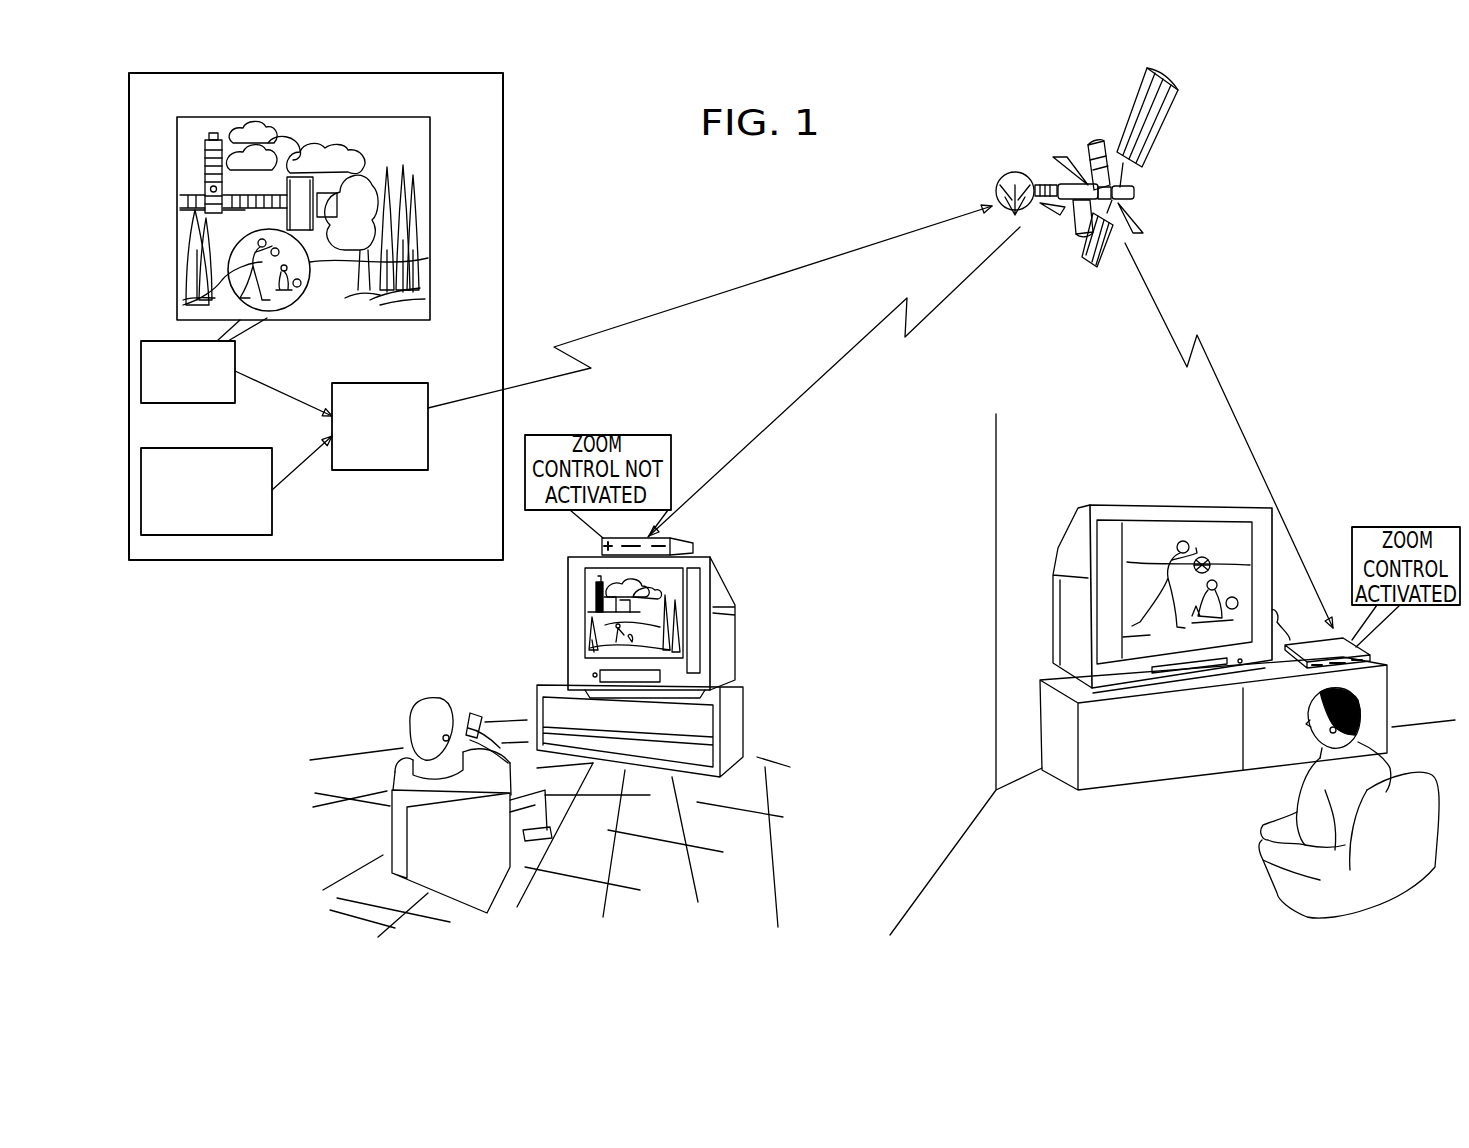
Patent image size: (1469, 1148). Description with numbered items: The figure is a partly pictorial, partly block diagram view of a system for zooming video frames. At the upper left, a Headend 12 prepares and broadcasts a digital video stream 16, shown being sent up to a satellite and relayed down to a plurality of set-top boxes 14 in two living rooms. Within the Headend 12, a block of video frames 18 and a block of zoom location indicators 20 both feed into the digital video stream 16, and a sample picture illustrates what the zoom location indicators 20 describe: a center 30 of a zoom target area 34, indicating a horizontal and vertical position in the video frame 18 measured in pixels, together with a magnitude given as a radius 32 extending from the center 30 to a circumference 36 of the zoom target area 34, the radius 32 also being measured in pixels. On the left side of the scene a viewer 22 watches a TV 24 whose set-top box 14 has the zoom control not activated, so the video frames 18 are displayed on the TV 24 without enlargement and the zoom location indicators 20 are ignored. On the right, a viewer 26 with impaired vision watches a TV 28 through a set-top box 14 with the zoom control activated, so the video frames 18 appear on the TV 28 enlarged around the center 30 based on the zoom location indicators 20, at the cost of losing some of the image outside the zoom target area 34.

The Headend 12 is at (503, 160).
The set-top box 14 is at (693, 548).
The digital video stream 16 is at (388, 383).
The video frames 18 is at (237, 358).
The zoom location indicators 20 is at (272, 510).
The viewer 22 is at (413, 716).
The TV 24 is at (568, 612).
The viewer 26 is at (1370, 703).
The TV 28 is at (1130, 507).
The center 30 is at (250, 245).
The radius 32 is at (290, 253).
The zoom target area 34 is at (207, 192).
The circumference 36 is at (267, 272).